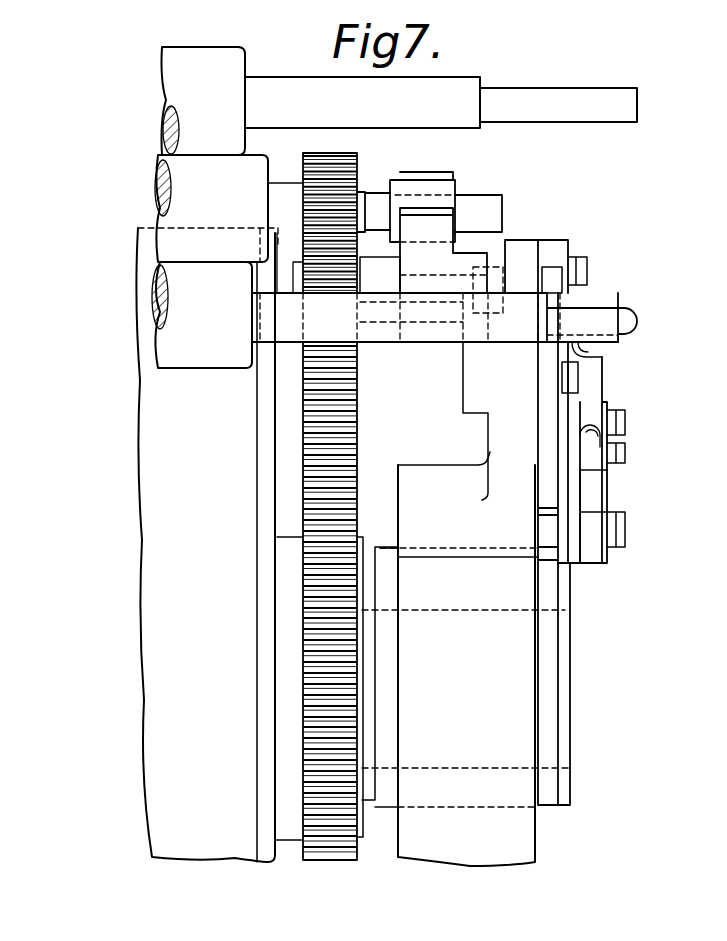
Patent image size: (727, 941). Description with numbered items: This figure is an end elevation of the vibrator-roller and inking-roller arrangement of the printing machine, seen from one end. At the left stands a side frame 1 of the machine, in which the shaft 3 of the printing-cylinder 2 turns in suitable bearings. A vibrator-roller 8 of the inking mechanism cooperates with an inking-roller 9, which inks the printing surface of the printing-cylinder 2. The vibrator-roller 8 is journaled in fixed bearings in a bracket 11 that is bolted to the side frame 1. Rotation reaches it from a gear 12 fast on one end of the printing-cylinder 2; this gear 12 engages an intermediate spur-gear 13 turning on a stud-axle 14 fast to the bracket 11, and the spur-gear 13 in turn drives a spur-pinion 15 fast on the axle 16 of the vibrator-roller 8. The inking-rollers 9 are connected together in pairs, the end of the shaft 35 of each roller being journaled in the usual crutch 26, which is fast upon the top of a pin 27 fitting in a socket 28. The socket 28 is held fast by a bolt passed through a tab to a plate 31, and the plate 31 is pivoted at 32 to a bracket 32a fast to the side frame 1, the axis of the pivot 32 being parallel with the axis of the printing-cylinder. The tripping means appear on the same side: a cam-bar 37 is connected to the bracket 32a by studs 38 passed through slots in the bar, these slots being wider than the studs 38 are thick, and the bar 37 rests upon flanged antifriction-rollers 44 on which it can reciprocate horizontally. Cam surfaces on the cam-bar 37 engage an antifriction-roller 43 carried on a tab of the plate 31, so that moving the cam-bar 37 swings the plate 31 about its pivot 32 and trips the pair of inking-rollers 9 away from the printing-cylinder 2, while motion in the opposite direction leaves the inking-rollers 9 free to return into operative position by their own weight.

The side frame 1 is at (466, 665).
The printing-cylinder 2 is at (219, 545).
The shaft 3 is at (470, 608).
The vibrator-roller 8 is at (208, 208).
The inking-roller 9 is at (202, 315).
The bracket 11 is at (446, 336).
The gear 12 is at (345, 401).
The intermediate spur-gear 13 is at (312, 267).
The stud-axle 14 is at (380, 275).
The spur-pinion 15 is at (351, 158).
The axle 16 is at (487, 204).
The crutch 26 is at (611, 301).
The pin 27 is at (611, 354).
The socket 28 is at (596, 374).
The plate 31 is at (548, 387).
The pivot 32 is at (562, 368).
The bracket 32a is at (465, 463).
The shaft 35 is at (406, 336).
The cam-bar 37 is at (592, 490).
The stud 38 is at (626, 422).
The antifriction-roller 43 is at (625, 458).
The flanged antifriction-roller 44 is at (626, 523).